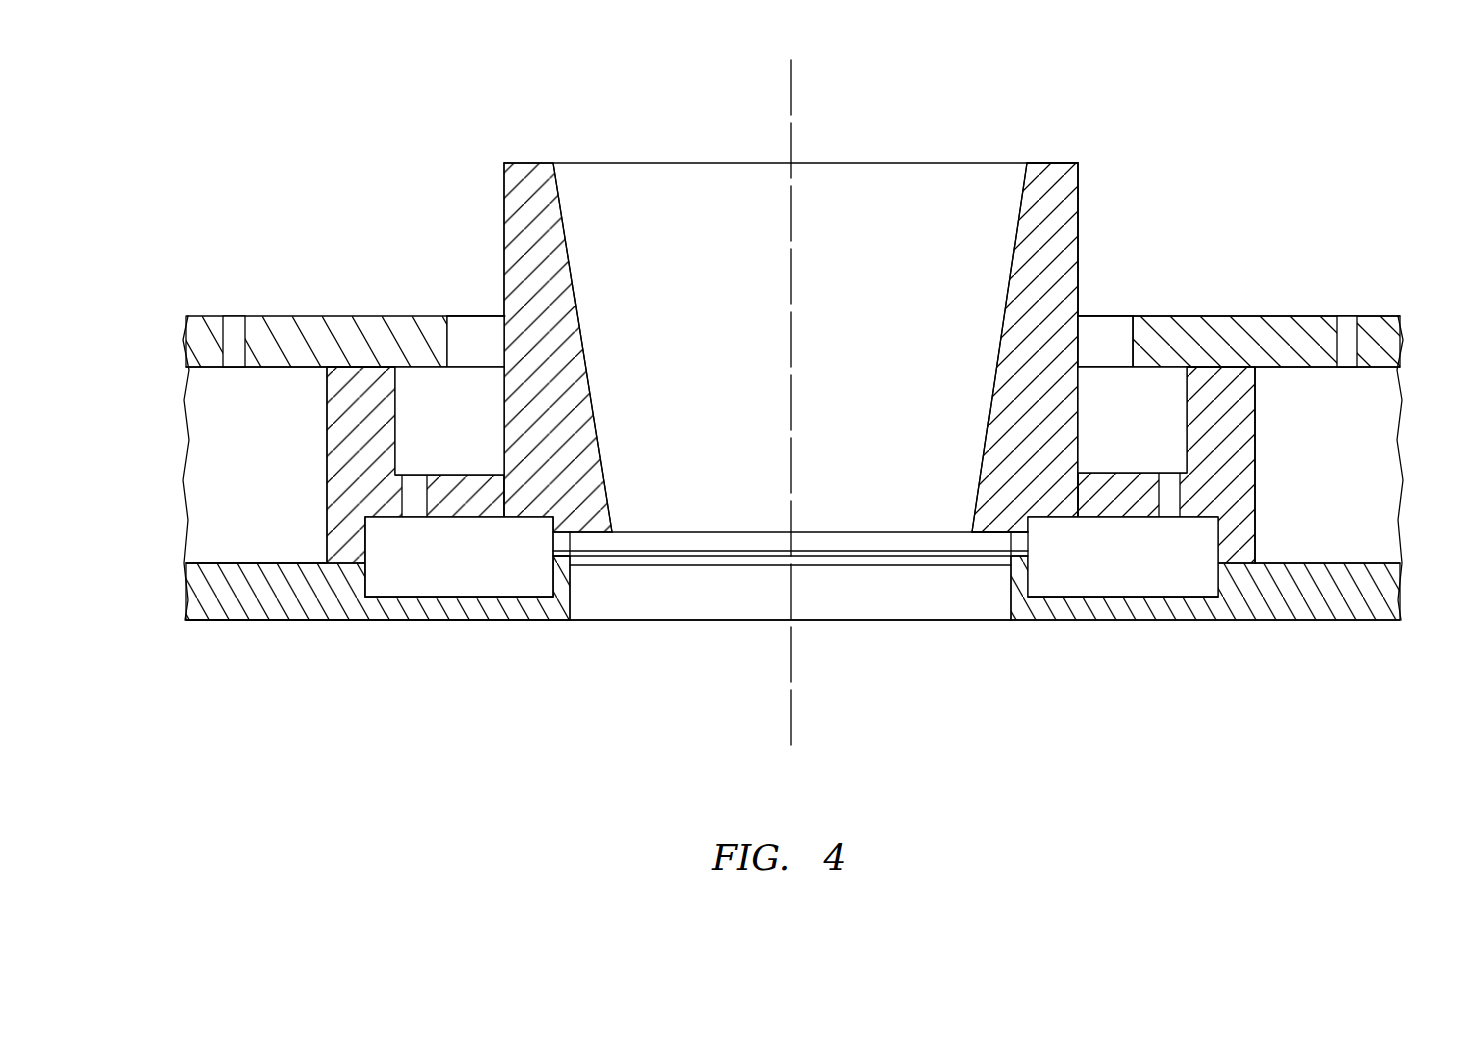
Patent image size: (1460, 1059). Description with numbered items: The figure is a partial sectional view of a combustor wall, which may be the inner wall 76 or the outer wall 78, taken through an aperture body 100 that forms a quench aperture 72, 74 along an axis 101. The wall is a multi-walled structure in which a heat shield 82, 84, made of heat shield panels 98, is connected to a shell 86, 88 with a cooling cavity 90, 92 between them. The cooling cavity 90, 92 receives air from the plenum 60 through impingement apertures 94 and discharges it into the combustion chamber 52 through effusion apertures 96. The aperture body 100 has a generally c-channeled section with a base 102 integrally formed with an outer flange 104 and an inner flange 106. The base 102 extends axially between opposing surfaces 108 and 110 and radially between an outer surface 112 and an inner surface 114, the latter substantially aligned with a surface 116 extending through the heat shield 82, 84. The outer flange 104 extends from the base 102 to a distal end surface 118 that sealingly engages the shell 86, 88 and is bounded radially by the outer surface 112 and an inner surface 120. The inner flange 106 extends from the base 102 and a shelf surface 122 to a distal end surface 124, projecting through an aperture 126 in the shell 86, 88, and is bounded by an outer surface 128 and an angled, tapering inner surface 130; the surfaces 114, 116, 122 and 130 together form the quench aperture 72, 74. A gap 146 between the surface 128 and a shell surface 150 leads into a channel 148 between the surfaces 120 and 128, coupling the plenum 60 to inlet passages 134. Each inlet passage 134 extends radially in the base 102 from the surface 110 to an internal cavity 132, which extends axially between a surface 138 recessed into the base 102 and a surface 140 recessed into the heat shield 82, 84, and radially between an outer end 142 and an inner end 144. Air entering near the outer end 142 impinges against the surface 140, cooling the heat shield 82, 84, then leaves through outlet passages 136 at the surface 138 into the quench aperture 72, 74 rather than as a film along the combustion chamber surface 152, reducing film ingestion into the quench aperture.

The combustion chamber 52 is at (465, 731).
The plenum 60 is at (345, 102).
The quench aperture 72 is at (791, 138).
The quench aperture 74 is at (905, 192).
The inner wall 76 is at (1247, 215).
The outer wall 78 is at (1318, 158).
The heat shield 82 is at (350, 636).
The heat shield 84 is at (198, 628).
The shell 86 is at (345, 296).
The shell 88 is at (303, 312).
The cooling cavity 90 is at (769, 409).
The cooling cavity 92 is at (220, 497).
The impingement aperture 94 is at (238, 316).
The effusion aperture 96 is at (285, 590).
The heat shield panel 98 is at (365, 620).
The aperture body 100 is at (1092, 170).
The axis 101 is at (791, 709).
The base 102 is at (350, 520).
The outer flange 104 is at (345, 427).
The inner flange 106 is at (557, 343).
The surface 108 is at (1228, 597).
The surface 110 is at (1127, 473).
The outer surface 112 is at (1255, 462).
The inner surface 114 is at (1027, 557).
The surface 116 is at (1011, 620).
The distal end surface 118 is at (1260, 316).
The inner surface 120 is at (400, 378).
The shelf surface 122 is at (1030, 538).
The distal end surface 124 is at (1050, 163).
The aperture 126 is at (1105, 316).
The outer surface 128 is at (1078, 232).
The inner surface 130 is at (1005, 298).
The internal cavity 132 is at (436, 564).
The inlet passage 134 is at (412, 492).
The outlet passage 136 is at (563, 540).
The surface 138 is at (512, 522).
The surface 140 is at (483, 597).
The outer end 142 is at (366, 575).
The inner end 144 is at (557, 603).
The gap 146 is at (485, 316).
The channel 148 is at (431, 428).
The surface 150 is at (458, 316).
The combustion chamber surface 152 is at (315, 620).